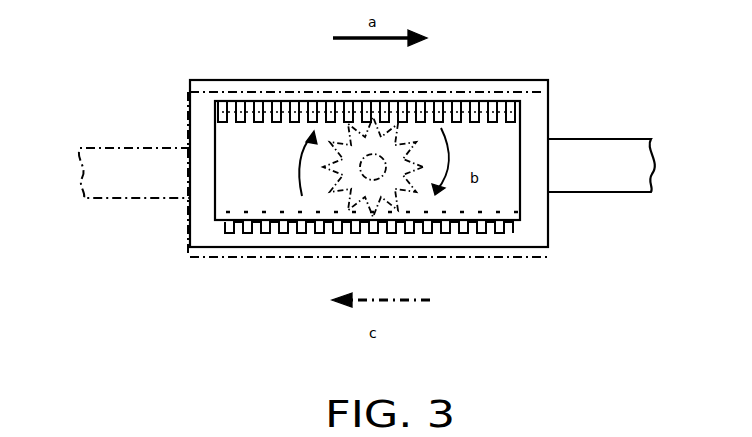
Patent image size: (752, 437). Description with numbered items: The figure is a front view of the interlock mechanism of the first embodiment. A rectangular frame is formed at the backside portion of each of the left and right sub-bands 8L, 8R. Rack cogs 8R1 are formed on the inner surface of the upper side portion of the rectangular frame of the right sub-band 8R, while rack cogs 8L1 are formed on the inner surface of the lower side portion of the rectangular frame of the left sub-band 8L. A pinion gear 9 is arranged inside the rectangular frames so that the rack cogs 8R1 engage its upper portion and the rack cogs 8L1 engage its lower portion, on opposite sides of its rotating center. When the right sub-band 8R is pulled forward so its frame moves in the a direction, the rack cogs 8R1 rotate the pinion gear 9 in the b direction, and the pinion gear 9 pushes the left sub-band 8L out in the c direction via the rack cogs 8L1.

The left sub-band 8L is at (133, 183).
The right sub-band 8R is at (593, 150).
The rack cogs 8R1 is at (506, 120).
The rack cogs 8L1 is at (470, 214).
The pinion gear 9 is at (383, 143).